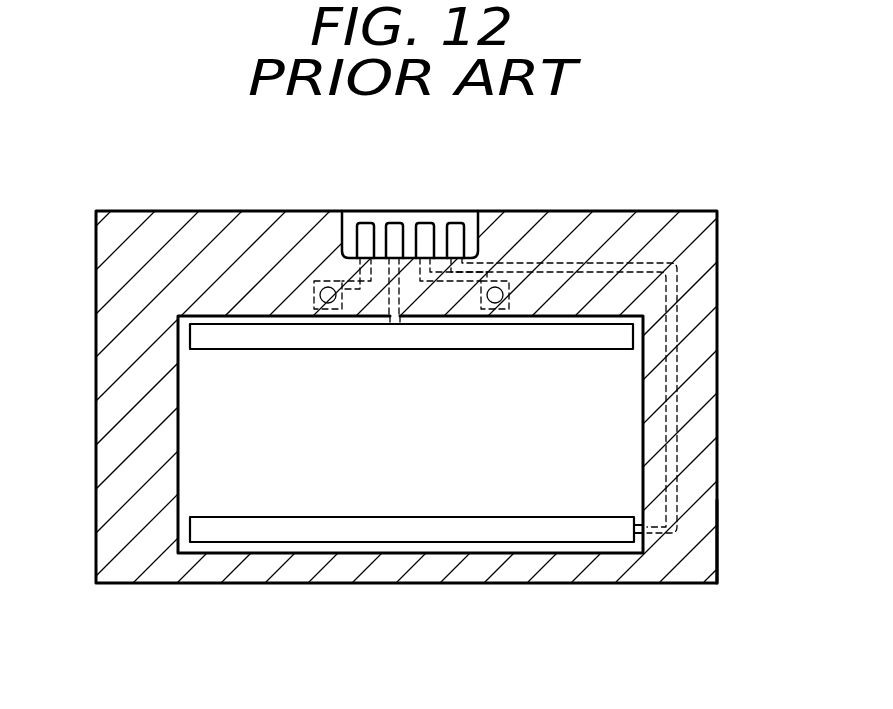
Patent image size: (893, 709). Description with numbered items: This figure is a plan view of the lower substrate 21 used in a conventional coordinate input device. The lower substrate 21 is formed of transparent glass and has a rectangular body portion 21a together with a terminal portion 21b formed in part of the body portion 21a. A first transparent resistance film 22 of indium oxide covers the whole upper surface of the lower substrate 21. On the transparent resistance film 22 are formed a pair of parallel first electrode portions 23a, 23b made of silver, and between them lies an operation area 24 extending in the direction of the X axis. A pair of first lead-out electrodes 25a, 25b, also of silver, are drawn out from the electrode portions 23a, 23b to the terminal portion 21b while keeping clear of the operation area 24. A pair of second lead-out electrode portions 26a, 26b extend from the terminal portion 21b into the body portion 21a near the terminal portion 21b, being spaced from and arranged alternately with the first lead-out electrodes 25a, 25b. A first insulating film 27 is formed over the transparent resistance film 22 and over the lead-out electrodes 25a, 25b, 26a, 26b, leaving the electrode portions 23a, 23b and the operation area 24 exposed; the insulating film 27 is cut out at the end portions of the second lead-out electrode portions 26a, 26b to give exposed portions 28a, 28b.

The lower substrate 21 is at (192, 583).
The body portion 21a is at (677, 290).
The terminal portion 21b is at (455, 232).
The first transparent resistance film 22 is at (641, 543).
The first electrode portion 23a is at (203, 333).
The first electrode portion 23b is at (433, 527).
The operation area 24 is at (345, 472).
The first lead-out electrode 25a is at (394, 232).
The first lead-out electrode 25b is at (476, 231).
The second lead-out electrode portion 26a is at (363, 237).
The second lead-out electrode portion 26b is at (425, 232).
The first insulating film 27 is at (707, 534).
The exposed portion 28a is at (326, 287).
The exposed portion 28b is at (503, 289).